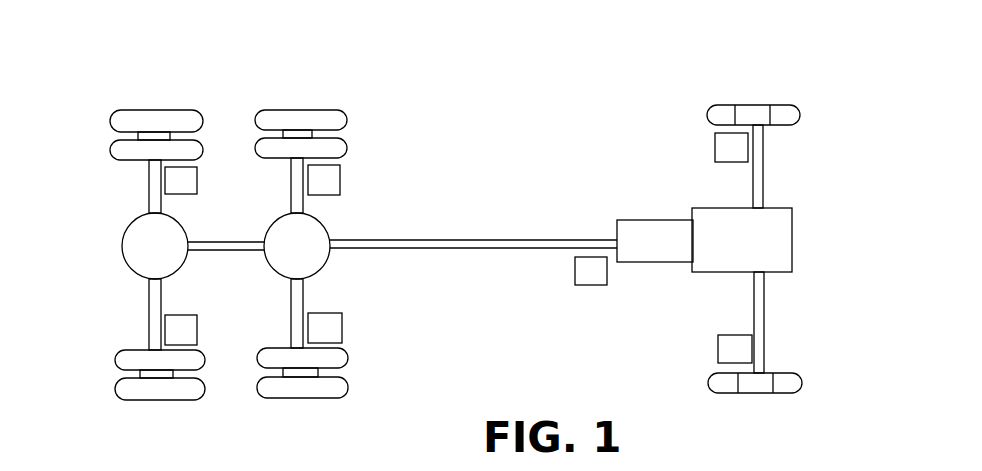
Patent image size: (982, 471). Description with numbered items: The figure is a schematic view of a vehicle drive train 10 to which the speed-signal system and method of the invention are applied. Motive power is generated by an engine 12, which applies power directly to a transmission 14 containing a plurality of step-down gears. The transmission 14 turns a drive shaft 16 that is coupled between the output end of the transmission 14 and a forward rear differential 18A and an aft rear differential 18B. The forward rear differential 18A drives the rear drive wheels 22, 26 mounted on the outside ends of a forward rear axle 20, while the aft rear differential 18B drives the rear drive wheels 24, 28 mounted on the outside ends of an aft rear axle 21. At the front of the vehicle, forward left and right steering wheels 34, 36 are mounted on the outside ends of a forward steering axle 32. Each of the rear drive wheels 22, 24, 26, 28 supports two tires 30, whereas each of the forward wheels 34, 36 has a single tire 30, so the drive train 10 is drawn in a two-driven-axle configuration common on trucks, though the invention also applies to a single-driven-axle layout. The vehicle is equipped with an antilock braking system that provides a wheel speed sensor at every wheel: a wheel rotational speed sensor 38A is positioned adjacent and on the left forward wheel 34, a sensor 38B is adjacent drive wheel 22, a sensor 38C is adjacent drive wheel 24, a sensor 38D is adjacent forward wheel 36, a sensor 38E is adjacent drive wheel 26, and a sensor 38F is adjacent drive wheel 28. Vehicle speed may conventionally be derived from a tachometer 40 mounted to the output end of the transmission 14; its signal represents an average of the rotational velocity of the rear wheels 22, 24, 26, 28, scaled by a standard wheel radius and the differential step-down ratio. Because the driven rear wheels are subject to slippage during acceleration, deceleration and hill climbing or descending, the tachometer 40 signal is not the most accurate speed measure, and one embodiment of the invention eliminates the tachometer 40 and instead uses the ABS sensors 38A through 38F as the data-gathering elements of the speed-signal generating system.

The vehicle drive train 10 is at (511, 131).
The engine 12 is at (792, 272).
The transmission 14 is at (663, 262).
The drive shaft 16 is at (508, 240).
The forward rear differential 18A is at (328, 262).
The aft rear differential 18B is at (130, 272).
The forward rear axle 20 is at (306, 293).
The aft rear axle 21 is at (148, 202).
The rear drive wheel 22 is at (312, 131).
The rear drive wheel 24 is at (137, 136).
The rear drive wheel 26 is at (318, 372).
The rear drive wheel 28 is at (140, 374).
The tire 30 is at (194, 110).
The forward steering axle 32 is at (763, 192).
The forward left steering wheel 34 is at (758, 105).
The forward right steering wheel 36 is at (765, 393).
The wheel rotational speed sensor 38A is at (715, 160).
The wheel rotational speed sensor 38B is at (340, 182).
The wheel rotational speed sensor 38C is at (197, 187).
The wheel rotational speed sensor 38D is at (718, 350).
The wheel rotational speed sensor 38E is at (342, 318).
The wheel rotational speed sensor 38F is at (197, 318).
The tachometer 40 is at (583, 285).